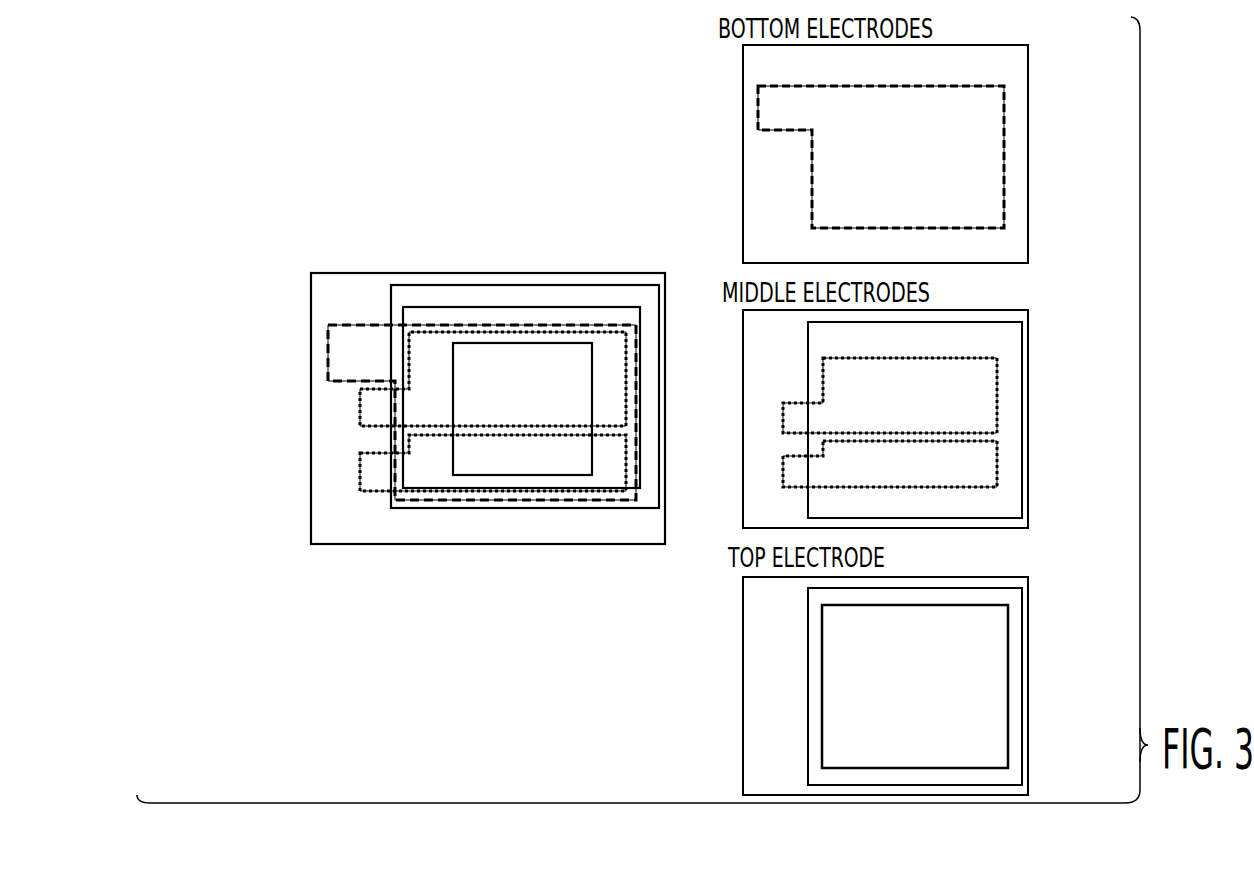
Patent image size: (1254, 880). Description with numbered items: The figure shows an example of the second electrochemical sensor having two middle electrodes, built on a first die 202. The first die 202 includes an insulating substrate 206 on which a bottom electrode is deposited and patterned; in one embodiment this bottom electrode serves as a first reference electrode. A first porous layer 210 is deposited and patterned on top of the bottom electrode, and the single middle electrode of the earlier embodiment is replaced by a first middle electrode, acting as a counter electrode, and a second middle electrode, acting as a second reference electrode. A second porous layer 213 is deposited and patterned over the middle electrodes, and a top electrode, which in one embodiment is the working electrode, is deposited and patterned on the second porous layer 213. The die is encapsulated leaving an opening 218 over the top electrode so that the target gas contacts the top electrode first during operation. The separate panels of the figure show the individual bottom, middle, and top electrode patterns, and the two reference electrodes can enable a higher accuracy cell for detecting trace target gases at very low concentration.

The first die 202 is at (562, 214).
The insulating substrate 206 is at (333, 283).
The first porous layer 210 is at (630, 295).
The second porous layer 213 is at (525, 396).
The opening 218 is at (505, 357).